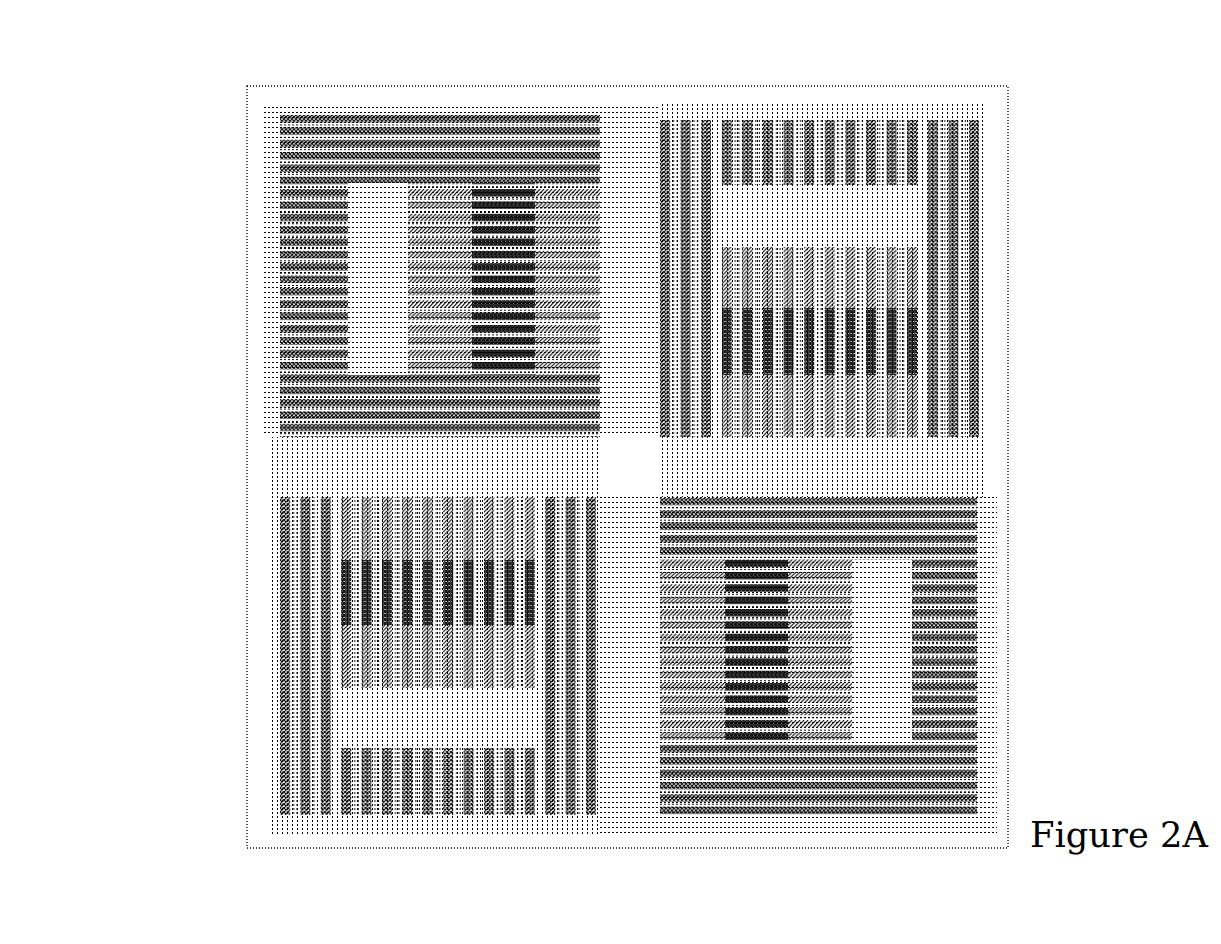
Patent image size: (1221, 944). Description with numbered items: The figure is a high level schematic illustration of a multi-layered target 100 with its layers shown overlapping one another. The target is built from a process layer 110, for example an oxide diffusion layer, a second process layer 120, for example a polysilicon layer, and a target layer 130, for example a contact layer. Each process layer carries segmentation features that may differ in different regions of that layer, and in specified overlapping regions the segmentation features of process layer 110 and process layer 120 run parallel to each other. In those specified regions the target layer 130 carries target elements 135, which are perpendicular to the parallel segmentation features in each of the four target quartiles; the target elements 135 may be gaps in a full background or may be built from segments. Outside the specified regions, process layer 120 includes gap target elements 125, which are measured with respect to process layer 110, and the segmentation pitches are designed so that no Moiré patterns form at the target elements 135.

The multi-layered target 100 is at (203, 69).
The process layer 110 is at (295, 482).
The process layer 120 is at (285, 233).
The gap target elements 125 is at (370, 288).
The target layer 130 is at (275, 93).
The target elements 135 is at (458, 204).